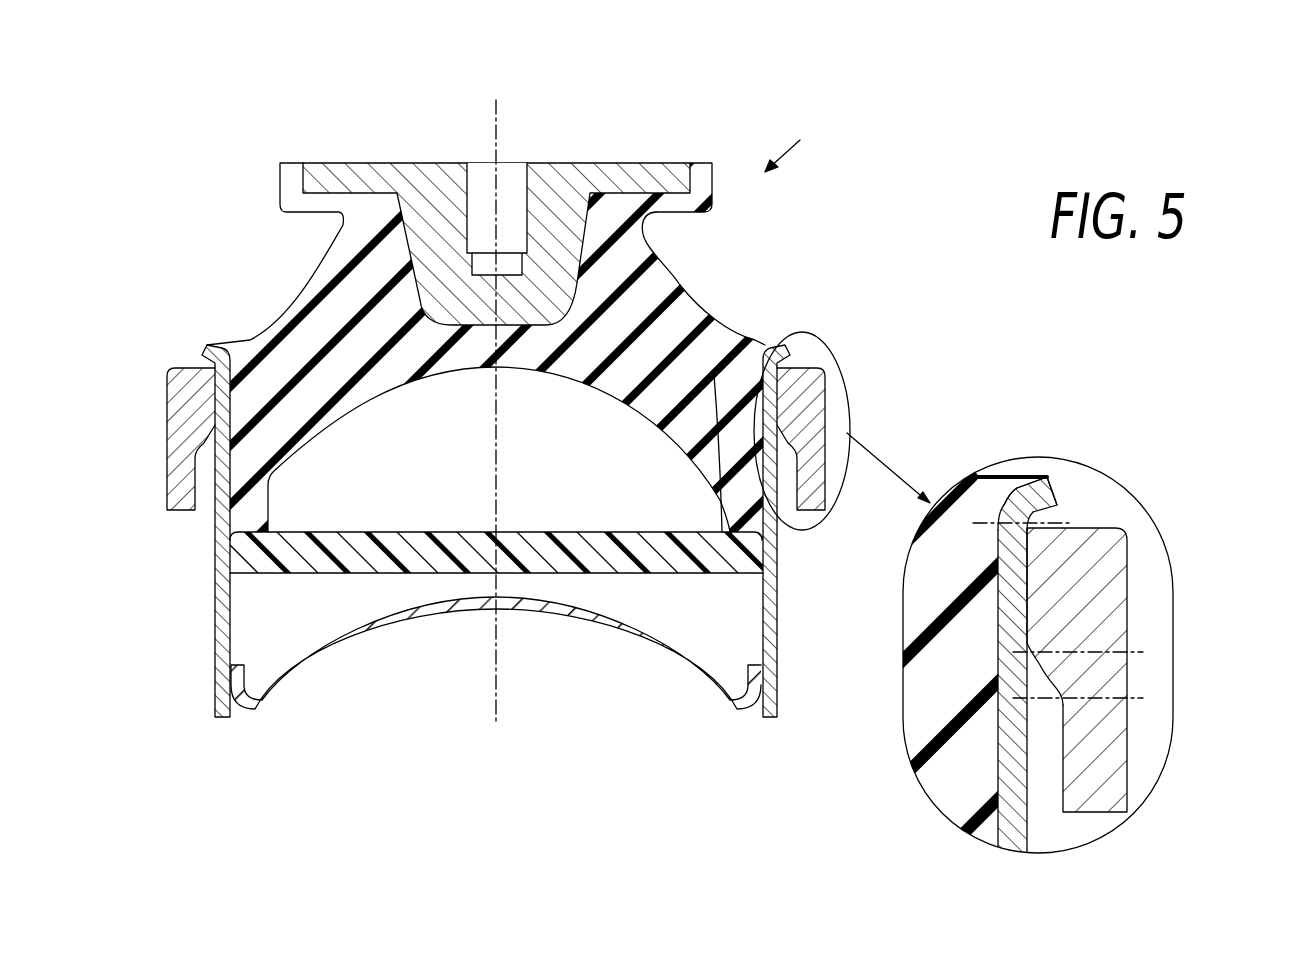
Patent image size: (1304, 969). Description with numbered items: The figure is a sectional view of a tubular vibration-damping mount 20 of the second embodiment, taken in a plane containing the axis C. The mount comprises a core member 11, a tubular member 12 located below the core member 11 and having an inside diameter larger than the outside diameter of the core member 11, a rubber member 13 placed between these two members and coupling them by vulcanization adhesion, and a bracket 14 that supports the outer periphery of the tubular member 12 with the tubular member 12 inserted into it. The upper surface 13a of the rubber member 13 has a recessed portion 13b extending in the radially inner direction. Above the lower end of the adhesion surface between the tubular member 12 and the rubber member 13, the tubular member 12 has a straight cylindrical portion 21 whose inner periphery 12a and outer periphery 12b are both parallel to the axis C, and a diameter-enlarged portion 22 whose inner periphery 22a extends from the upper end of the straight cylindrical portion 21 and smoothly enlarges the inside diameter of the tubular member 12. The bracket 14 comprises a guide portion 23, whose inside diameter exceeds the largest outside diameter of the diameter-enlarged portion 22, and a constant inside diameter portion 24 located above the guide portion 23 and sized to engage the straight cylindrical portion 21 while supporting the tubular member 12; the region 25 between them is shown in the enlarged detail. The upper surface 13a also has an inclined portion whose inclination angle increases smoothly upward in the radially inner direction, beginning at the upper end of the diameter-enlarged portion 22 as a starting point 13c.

The core member 11 is at (570, 185).
The tubular member 12 is at (222, 530).
The inner periphery 12a is at (995, 758).
The outer periphery 12b is at (1027, 780).
The rubber member 13 is at (313, 327).
The upper surface 13a is at (677, 280).
The recessed portion 13b is at (647, 223).
The starting point 13c is at (1047, 497).
The bracket 14 is at (817, 382).
The tubular vibration-damping mount 20 is at (809, 134).
The straight cylindrical portion 21 is at (1032, 545).
The diameter-enlarged portion 22 is at (1045, 478).
The inner periphery 22a is at (1023, 487).
The guide portion 23 is at (1102, 740).
The constant inside diameter portion 24 is at (1103, 620).
The step portion of bracket 25 is at (1108, 673).
The axis C is at (497, 123).